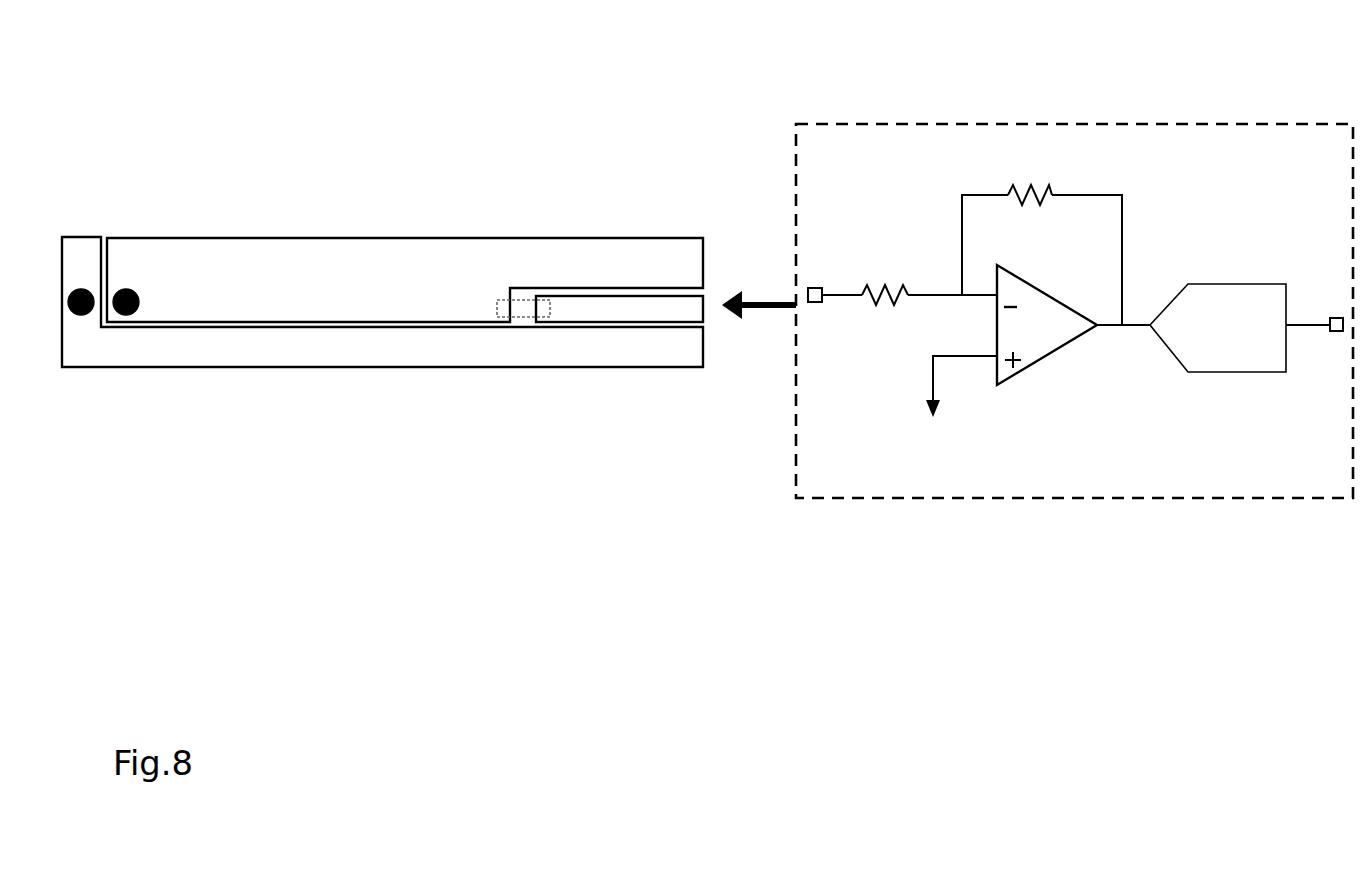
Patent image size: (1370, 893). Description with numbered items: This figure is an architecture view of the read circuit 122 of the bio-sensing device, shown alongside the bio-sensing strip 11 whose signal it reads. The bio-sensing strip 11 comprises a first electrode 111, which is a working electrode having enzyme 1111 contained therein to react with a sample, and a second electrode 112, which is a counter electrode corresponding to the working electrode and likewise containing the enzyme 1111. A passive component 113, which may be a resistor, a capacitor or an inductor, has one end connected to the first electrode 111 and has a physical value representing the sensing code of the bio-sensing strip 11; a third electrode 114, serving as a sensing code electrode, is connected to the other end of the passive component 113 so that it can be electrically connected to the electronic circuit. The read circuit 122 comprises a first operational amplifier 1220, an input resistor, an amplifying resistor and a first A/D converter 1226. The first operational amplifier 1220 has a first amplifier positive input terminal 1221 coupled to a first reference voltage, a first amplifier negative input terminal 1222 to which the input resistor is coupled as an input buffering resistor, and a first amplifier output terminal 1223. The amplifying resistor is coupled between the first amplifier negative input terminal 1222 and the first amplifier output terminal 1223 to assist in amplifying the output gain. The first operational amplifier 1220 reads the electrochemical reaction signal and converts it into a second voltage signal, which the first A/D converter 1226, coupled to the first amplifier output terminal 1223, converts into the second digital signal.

The bio-sensing strip 11 is at (382, 290).
The first electrode 111 is at (452, 272).
The second electrode 112 is at (323, 342).
The passive component 113 is at (524, 313).
The third electrode 114 is at (679, 313).
The enzyme 1111 is at (123, 314).
The read circuit 122 is at (1074, 265).
The first operational amplifier 1220 is at (1052, 357).
The first amplifier positive input terminal 1221 is at (970, 356).
The first amplifier negative input terminal 1222 is at (983, 297).
The first amplifier output terminal 1223 is at (1105, 325).
The first A/D converter 1226 is at (1223, 288).